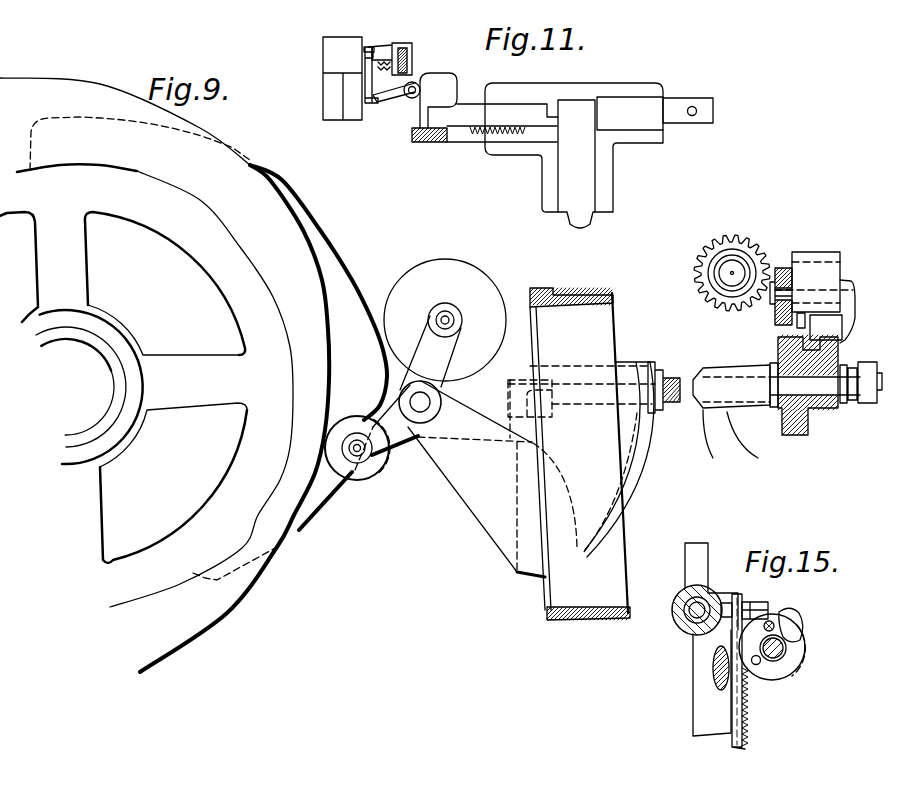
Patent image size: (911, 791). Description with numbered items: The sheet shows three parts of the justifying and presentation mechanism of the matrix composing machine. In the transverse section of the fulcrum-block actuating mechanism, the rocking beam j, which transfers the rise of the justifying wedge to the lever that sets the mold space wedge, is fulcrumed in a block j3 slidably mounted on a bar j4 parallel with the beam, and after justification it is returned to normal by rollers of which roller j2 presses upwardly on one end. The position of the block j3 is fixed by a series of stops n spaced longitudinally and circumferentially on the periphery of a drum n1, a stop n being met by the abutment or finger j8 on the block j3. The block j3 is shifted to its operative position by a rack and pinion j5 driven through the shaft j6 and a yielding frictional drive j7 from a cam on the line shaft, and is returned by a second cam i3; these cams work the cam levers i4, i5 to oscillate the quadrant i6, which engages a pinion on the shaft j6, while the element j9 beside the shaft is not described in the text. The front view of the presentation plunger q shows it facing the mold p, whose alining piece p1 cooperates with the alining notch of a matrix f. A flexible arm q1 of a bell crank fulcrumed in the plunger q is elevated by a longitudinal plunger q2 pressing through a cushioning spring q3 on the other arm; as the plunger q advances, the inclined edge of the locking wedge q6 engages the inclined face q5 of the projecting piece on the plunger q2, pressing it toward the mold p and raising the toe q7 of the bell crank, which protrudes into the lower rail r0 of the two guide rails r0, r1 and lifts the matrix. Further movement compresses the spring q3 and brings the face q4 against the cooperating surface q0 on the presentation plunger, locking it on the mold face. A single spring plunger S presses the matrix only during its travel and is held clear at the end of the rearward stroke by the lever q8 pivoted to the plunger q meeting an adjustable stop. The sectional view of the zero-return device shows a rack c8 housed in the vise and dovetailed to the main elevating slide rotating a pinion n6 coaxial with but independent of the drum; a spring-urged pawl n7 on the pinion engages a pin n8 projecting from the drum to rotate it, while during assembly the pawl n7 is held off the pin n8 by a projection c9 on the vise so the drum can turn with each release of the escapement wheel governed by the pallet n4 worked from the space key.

In FIG. 9, the roller j2 is at (43, 93).
In FIG. 9, the rocking beam j is at (110, 356).
In FIG. 9, the cam i3 is at (322, 483).
In FIG. 9, the cam lever i4 is at (410, 441).
In FIG. 9, the cam lever i5 is at (445, 341).
In FIG. 9, the quadrant i6 is at (637, 471).
In FIG. 9, the shaft j6 is at (655, 444).
In FIG. 9, the stop n is at (758, 257).
In FIG. 9, the drum n1 is at (745, 240).
In FIG. 9, the finger j8 is at (768, 258).
In FIG. 9, the fulcrum block j3 is at (818, 272).
In FIG. 9, the bar j4 is at (832, 327).
In FIG. 9, the rack and pinion j5 is at (783, 340).
In FIG. 9, the frictional drive j7 is at (793, 432).
In FIG. 9, the nut j9 is at (853, 368).
In FIG. 11, the mold p is at (342, 92).
In FIG. 11, the matrix f is at (345, 66).
In FIG. 11, the toe q7 is at (372, 98).
In FIG. 11, the guide rail r1 is at (392, 45).
In FIG. 11, the spring plunger S is at (398, 43).
In FIG. 11, the lever q8 is at (407, 57).
In FIG. 11, the flexible arm q1 is at (415, 85).
In FIG. 11, the alining piece p1 is at (382, 103).
In FIG. 11, the lower rail r0 is at (393, 97).
In FIG. 11, the presentation plunger q is at (438, 83).
In FIG. 11, the cushioning spring q3 is at (430, 131).
In FIG. 11, the longitudinal plunger q2 is at (466, 131).
In FIG. 11, the locking wedge q6 is at (567, 158).
In FIG. 11, the cooperating surface q0 is at (547, 113).
In FIG. 11, the face q4 is at (558, 128).
In FIG. 11, the inclined face q5 is at (560, 130).
In FIG. 15, the rack c8 is at (748, 722).
In FIG. 15, the projection c9 is at (750, 608).
In FIG. 15, the pallet n4 is at (793, 657).
In FIG. 15, the pawl n7 is at (775, 622).
In FIG. 15, the pin n8 is at (795, 632).
In FIG. 15, the pinion n6 is at (790, 672).